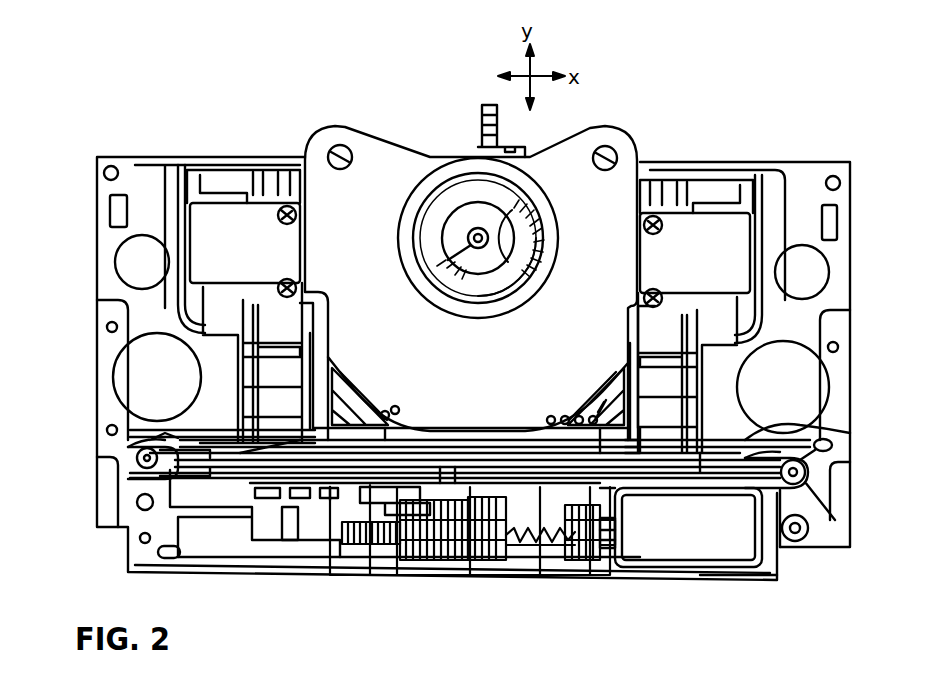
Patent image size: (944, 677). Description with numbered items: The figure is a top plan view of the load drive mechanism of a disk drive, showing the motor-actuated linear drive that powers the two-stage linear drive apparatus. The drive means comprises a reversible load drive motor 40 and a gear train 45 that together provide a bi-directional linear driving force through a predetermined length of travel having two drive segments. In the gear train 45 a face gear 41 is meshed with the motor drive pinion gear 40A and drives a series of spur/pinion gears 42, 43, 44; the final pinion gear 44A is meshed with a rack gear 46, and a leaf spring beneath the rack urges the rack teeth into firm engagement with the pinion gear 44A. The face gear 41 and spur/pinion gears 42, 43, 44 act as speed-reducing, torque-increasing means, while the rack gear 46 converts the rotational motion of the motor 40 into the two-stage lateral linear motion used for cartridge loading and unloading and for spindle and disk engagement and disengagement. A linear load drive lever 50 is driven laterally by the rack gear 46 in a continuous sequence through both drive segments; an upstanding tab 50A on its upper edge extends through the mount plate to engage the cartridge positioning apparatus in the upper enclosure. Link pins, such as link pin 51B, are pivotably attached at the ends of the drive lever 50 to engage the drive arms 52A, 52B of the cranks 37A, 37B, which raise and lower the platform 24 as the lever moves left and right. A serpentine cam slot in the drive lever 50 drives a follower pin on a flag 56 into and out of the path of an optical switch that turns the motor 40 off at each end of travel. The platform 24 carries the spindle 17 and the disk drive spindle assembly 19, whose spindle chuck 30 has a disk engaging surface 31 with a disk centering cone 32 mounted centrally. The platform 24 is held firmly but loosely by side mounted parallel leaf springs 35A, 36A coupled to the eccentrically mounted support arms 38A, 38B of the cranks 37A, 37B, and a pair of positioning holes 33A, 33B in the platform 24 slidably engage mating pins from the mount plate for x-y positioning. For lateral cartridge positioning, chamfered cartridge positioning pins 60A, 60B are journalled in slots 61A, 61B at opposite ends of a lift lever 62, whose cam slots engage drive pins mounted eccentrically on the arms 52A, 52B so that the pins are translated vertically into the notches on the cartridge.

The spindle 17 is at (440, 265).
The disk drive spindle assembly 19 is at (556, 205).
The platform 24 is at (420, 145).
The spindle chuck 30 is at (540, 290).
The disk engaging surface 31 is at (502, 300).
The disk centering cone 32 is at (540, 236).
The positioning hole 33A is at (342, 152).
The positioning hole 33B is at (607, 152).
The leaf spring 35A is at (237, 200).
The leaf spring 36A is at (716, 210).
The crank 37A is at (200, 385).
The crank 37B is at (720, 385).
The support arm 38A is at (190, 306).
The support arm 38B is at (760, 308).
The load drive motor 40 is at (715, 555).
The motor drive pinion gear 40A is at (620, 548).
The face gear 41 is at (590, 551).
The spur/pinion gear 42 is at (542, 560).
The spur/pinion gear 43 is at (372, 565).
The spur/pinion gear 44 is at (432, 565).
The pinion gear 44A is at (486, 565).
The gear train 45 is at (472, 576).
The rack gear 46 is at (460, 490).
The linear load drive lever 50 is at (420, 445).
The upstanding tab 50A is at (528, 450).
The link pin 51B is at (805, 430).
The drive arm 52A is at (160, 441).
The drive arm 52B is at (832, 445).
The flag 56 is at (298, 545).
The cartridge positioning pin 60A is at (138, 458).
The cartridge positioning pin 60B is at (805, 472).
The slot 61A is at (160, 478).
The slot 61B is at (812, 490).
The lift lever 62 is at (200, 478).